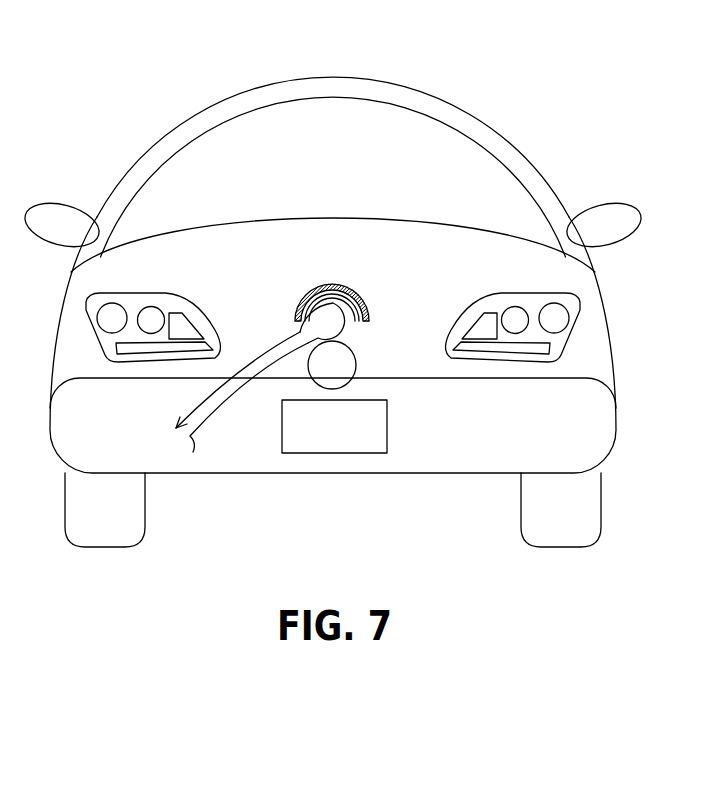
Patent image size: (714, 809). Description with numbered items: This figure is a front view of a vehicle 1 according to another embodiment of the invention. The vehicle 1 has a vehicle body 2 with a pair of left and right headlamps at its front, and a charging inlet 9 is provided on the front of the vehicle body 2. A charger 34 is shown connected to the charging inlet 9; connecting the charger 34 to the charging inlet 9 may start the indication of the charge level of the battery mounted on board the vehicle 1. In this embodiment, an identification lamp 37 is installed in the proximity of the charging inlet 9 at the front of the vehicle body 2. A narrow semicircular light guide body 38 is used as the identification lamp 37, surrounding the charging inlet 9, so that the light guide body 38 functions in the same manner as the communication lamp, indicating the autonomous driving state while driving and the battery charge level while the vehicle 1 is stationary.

The vehicle 1 is at (155, 115).
The vehicle body 2 is at (364, 76).
The charging inlet 9 is at (362, 321).
The charger 34 is at (262, 342).
The identification lamp 37 is at (372, 305).
The light guide body 38 is at (301, 306).